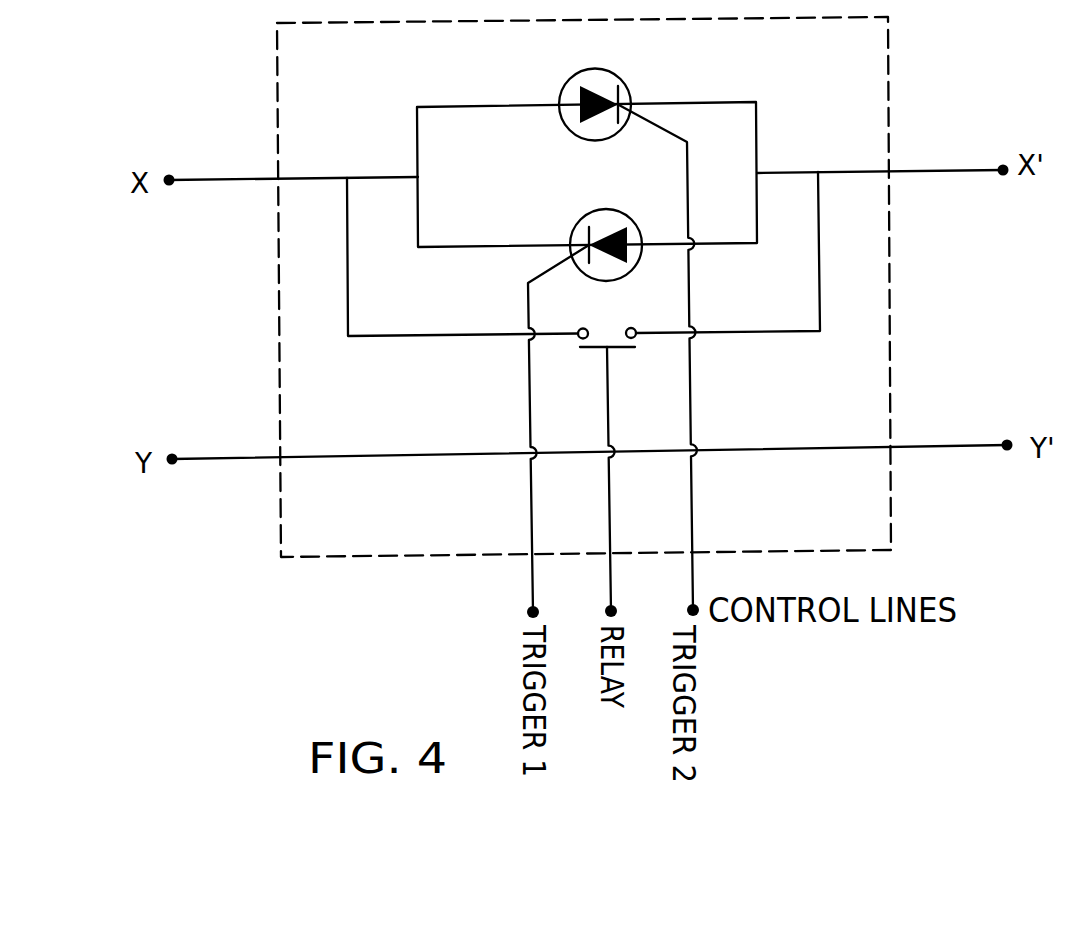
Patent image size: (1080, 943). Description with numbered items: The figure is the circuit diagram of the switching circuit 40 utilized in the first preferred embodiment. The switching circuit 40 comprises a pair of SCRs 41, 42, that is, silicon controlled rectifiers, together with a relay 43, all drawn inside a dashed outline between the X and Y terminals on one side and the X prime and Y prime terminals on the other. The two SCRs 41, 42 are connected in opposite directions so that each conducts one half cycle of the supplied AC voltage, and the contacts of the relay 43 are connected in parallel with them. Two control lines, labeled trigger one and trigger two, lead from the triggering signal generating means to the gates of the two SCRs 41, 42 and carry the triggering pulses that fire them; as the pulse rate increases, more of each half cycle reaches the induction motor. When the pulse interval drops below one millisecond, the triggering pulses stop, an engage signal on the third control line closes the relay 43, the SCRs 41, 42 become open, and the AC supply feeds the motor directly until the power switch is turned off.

The switching circuit 40 is at (617, 287).
The SCR 41 is at (629, 93).
The SCR 42 is at (576, 225).
The relay 43 is at (613, 348).